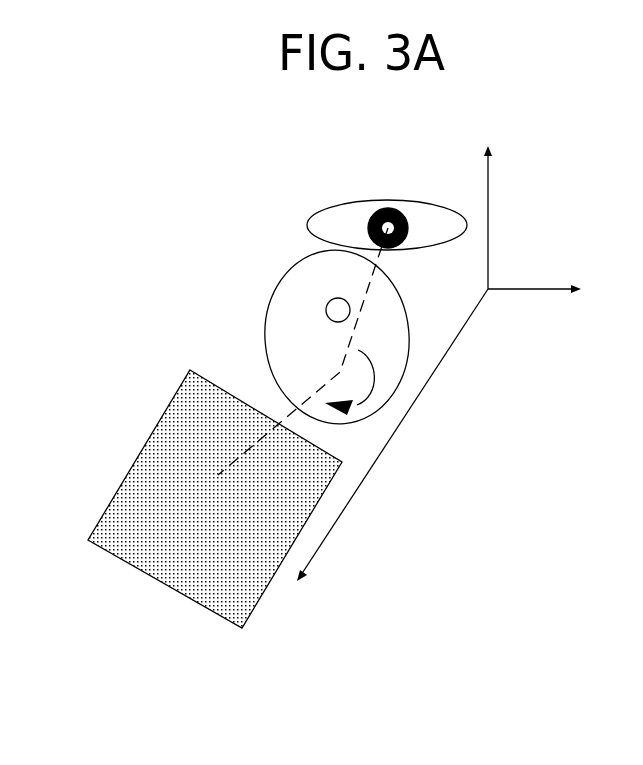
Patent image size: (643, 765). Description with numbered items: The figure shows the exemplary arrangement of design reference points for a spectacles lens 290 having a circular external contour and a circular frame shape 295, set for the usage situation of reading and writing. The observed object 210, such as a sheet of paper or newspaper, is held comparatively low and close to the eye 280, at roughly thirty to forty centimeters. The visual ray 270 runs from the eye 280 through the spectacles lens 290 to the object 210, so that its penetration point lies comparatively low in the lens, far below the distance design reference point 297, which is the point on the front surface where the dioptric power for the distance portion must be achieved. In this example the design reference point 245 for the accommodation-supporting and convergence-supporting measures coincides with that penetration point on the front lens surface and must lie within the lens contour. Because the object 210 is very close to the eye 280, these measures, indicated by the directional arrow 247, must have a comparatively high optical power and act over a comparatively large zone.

The object 210 is at (170, 582).
The design reference point 245 is at (324, 371).
The directional arrow 247 is at (374, 376).
The visual ray 270 is at (386, 250).
The eye 280 is at (402, 199).
The spectacles lens 290 is at (320, 277).
The circular frame shape 295 is at (390, 414).
The distance design reference point 297 is at (318, 310).